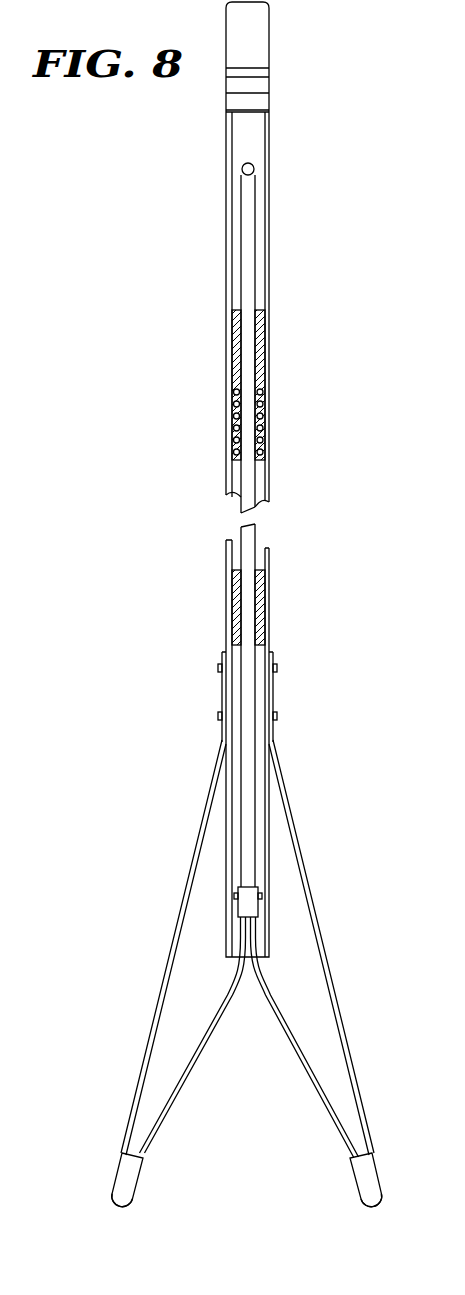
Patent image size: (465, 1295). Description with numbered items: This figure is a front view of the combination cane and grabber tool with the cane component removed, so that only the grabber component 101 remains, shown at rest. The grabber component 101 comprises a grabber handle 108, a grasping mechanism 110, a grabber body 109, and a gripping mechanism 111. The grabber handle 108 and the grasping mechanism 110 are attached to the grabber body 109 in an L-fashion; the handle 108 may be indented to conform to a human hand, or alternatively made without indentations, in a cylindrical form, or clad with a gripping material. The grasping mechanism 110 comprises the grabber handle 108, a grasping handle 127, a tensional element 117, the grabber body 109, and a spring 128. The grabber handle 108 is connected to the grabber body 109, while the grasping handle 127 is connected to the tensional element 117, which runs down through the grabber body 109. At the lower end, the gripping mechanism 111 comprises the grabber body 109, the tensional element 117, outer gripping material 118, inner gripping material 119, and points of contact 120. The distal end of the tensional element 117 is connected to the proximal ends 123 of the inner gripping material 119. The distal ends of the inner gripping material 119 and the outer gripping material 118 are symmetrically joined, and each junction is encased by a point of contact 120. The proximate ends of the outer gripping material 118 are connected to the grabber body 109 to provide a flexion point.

The grabber component 101 is at (125, 323).
The grabber handle 108 is at (296, 39).
The grabber body 109 is at (287, 245).
The grasping mechanism 110 is at (182, 152).
The gripping mechanism 111 is at (115, 936).
The tensional element 117 is at (246, 347).
The outer gripping material 118 is at (191, 863).
The inner gripping material 119 is at (219, 1019).
The points of contact 120 is at (114, 1211).
The proximal ends of the inner gripping material 123 is at (357, 1182).
The grasping handle 127 is at (254, 167).
The spring 128 is at (215, 383).